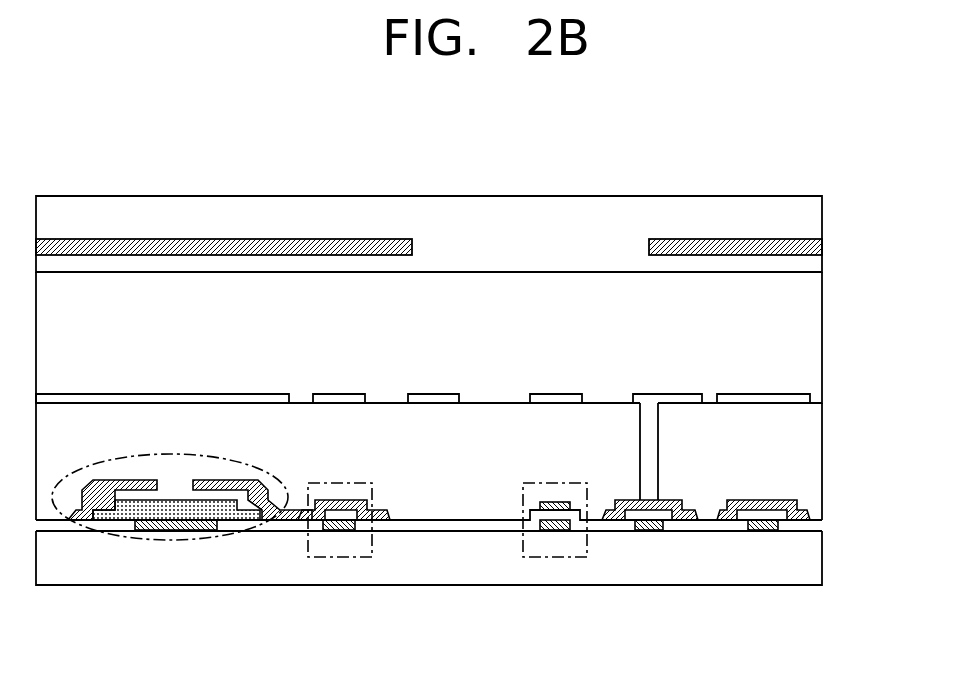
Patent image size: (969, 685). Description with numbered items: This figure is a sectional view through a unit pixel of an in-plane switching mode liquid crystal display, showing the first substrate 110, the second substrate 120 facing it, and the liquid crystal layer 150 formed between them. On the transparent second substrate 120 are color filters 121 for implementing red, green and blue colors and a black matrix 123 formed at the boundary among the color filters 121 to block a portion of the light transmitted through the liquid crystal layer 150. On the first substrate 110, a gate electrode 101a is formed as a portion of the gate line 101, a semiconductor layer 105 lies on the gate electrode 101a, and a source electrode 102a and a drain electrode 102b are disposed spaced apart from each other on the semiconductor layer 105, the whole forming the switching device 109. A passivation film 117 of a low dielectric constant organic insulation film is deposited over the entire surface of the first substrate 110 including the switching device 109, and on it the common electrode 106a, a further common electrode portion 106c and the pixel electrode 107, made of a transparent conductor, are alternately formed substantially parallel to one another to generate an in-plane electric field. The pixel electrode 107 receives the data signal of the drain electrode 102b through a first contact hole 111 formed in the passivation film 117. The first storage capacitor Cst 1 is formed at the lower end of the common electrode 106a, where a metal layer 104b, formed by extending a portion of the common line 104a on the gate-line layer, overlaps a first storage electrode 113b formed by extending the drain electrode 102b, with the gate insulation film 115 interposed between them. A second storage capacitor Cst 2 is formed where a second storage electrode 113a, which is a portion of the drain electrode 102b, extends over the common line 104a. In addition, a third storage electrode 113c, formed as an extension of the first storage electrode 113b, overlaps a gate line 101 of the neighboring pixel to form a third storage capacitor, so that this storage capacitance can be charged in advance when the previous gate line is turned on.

The second substrate 120 is at (810, 220).
The color filter 121 is at (512, 250).
The black matrix 123 is at (715, 243).
The liquid crystal layer 150 is at (810, 305).
The common electrode portion 106c is at (147, 398).
The pixel electrode 107 is at (437, 399).
The common electrode 106a is at (555, 399).
The first contact hole 111 is at (643, 458).
The passivation film 117 is at (810, 457).
The gate insulation film 115 is at (810, 526).
The first substrate 110 is at (805, 563).
The switching device 109 is at (160, 532).
The gate electrode 101a is at (190, 532).
The semiconductor layer 105 is at (112, 520).
The source electrode 102a is at (125, 480).
The drain electrode 102b is at (225, 480).
The second storage electrode 113a is at (380, 515).
The common line 104a is at (333, 531).
The second storage capacitor Cst 2 is at (340, 483).
The first storage capacitor Cst 1 is at (540, 483).
The metal layer 104b is at (555, 531).
The first storage electrode 113b is at (560, 500).
The third storage electrode 113c is at (773, 525).
The gate line 101 is at (757, 531).